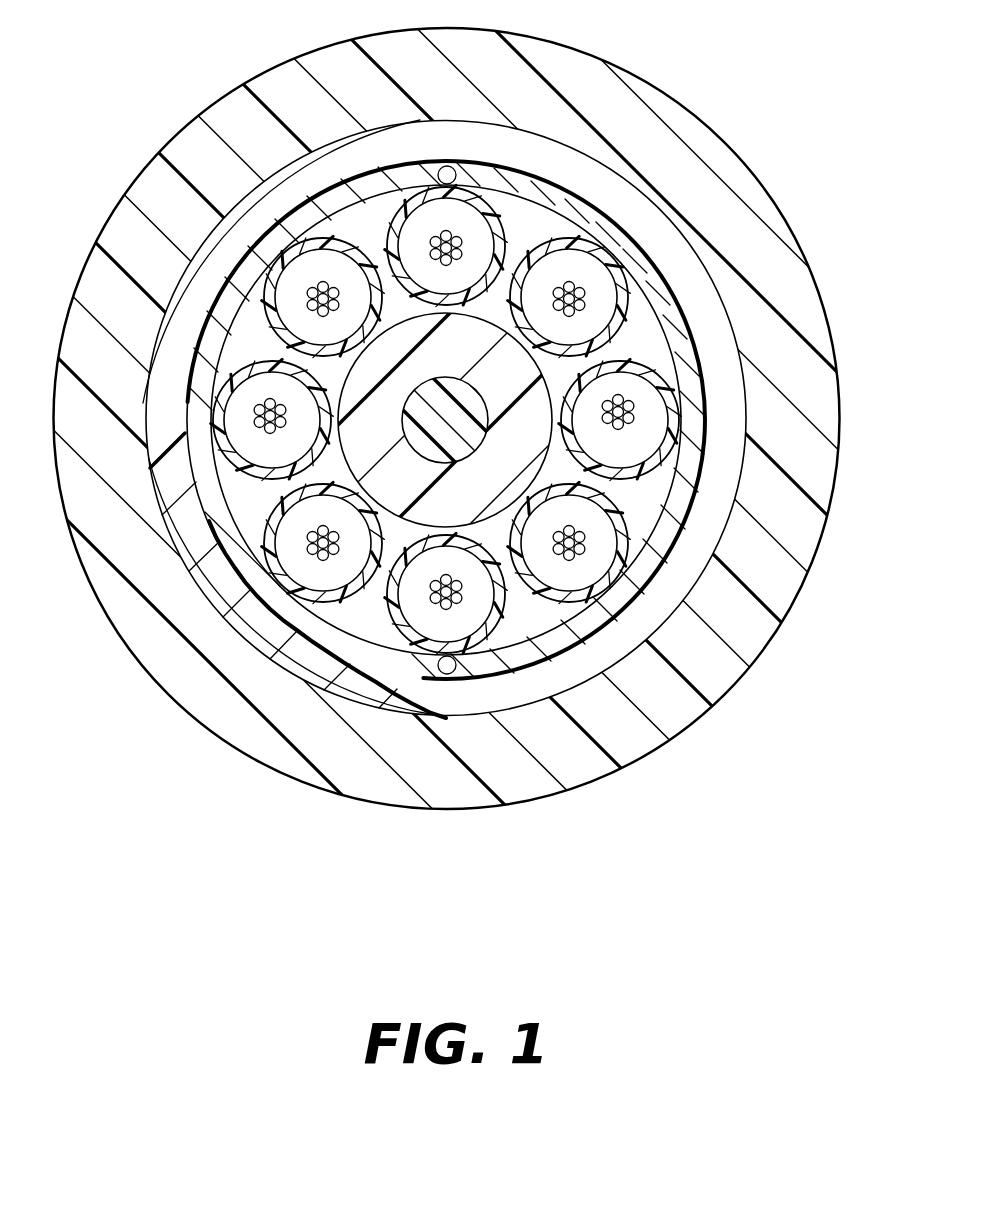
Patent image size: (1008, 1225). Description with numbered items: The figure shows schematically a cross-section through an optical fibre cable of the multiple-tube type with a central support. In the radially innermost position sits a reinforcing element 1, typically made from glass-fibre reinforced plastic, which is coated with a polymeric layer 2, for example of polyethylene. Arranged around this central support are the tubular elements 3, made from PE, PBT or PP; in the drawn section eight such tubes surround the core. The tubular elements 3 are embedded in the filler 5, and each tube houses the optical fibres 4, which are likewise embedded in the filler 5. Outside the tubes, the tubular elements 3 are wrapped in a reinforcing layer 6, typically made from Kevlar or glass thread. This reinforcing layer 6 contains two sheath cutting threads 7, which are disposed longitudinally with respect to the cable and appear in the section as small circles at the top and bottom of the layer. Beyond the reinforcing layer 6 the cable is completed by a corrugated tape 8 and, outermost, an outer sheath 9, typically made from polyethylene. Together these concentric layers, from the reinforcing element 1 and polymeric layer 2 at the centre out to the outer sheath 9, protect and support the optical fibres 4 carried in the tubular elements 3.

The reinforcing element 1 is at (520, 367).
The polymeric layer 2 is at (462, 380).
The tubular elements 3 is at (616, 343).
The optical fibres 4 is at (630, 397).
The filler 5 is at (647, 423).
The reinforcing layer 6 is at (706, 438).
The sheath cutting threads 7 is at (448, 674).
The corrugated tape 8 is at (732, 513).
The outer sheath 9 is at (760, 608).